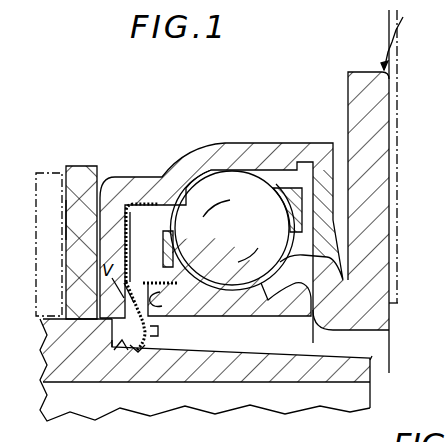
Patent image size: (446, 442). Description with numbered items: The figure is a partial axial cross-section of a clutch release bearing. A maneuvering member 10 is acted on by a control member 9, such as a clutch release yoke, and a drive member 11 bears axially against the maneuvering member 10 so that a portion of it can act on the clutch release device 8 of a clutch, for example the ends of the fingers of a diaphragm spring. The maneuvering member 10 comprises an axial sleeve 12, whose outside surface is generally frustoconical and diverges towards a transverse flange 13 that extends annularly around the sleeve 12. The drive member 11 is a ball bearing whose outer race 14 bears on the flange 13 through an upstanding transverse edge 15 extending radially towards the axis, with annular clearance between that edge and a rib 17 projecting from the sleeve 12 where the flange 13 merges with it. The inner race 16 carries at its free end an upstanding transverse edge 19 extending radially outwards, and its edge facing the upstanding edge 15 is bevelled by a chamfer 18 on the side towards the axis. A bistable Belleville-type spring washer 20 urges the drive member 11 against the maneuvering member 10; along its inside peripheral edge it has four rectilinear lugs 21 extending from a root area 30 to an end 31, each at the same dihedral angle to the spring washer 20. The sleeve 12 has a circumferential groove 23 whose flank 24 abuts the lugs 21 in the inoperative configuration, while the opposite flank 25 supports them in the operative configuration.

The clutch release device 8 is at (400, 154).
The control member 9 is at (50, 173).
The maneuvering member 10 is at (372, 356).
The drive member 11 is at (402, 40).
The axial sleeve 12 is at (327, 370).
The transverse flange 13 is at (86, 178).
The outer race 14 is at (240, 156).
The upstanding transverse edge 15 is at (80, 220).
The inner race 16 is at (230, 308).
The rib 17 is at (108, 330).
The chamfer 18 is at (182, 270).
The upstanding transverse edge 19 is at (380, 106).
The spring washer 20 is at (142, 277).
The lug 21 is at (138, 352).
The circumferential groove 23 is at (109, 315).
The flank 24 is at (116, 350).
The flank 25 is at (156, 332).
The root area 30 is at (162, 302).
The end 31 is at (114, 350).